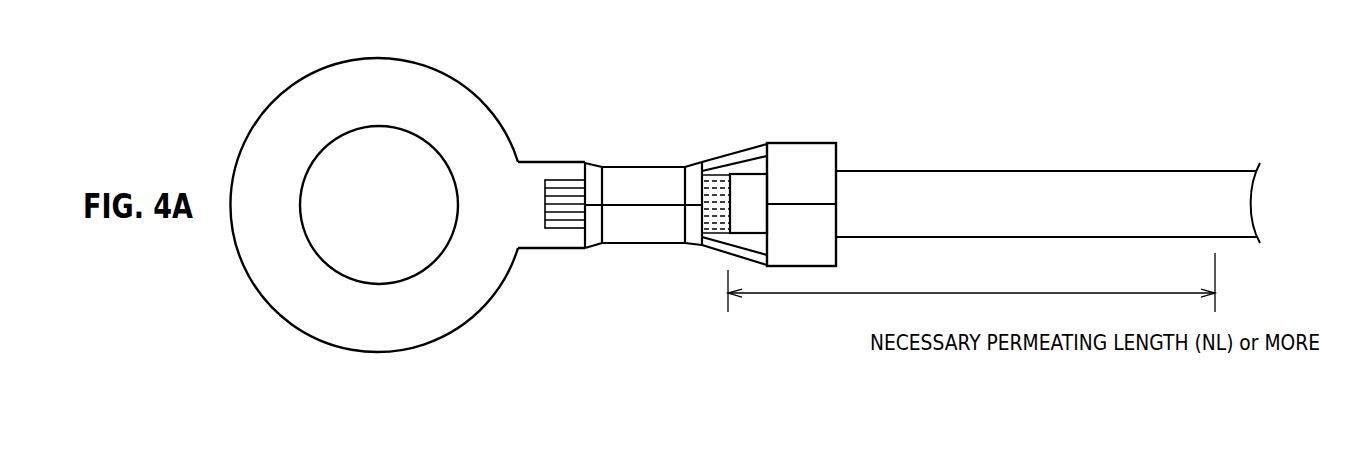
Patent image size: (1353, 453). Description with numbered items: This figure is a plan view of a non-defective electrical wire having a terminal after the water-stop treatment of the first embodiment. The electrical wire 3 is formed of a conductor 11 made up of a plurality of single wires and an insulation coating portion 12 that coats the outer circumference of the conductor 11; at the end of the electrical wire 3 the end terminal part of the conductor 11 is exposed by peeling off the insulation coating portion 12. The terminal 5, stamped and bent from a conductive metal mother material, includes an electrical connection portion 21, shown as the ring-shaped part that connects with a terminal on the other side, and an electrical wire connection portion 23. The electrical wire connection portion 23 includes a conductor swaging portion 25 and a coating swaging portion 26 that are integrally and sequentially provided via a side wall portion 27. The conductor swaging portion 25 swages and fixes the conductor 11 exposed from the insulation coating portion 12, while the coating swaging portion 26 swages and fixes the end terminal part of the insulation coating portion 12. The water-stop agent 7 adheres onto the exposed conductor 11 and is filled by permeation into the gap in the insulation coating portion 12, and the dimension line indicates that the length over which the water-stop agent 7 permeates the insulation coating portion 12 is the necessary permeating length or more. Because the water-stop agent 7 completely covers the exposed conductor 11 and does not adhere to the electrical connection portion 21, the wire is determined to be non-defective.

The electrical wire 3 is at (993, 168).
The terminal 5 is at (533, 205).
The water-stop agent 7 is at (718, 176).
The conductor 11 is at (568, 226).
The insulation coating portion 12 is at (750, 229).
The electrical connection portion 21 is at (569, 130).
The electrical wire connection portion 23 is at (628, 162).
The conductor swaging portion 25 is at (628, 238).
The coating swaging portion 26 is at (813, 258).
The side wall portion 27 is at (713, 252).